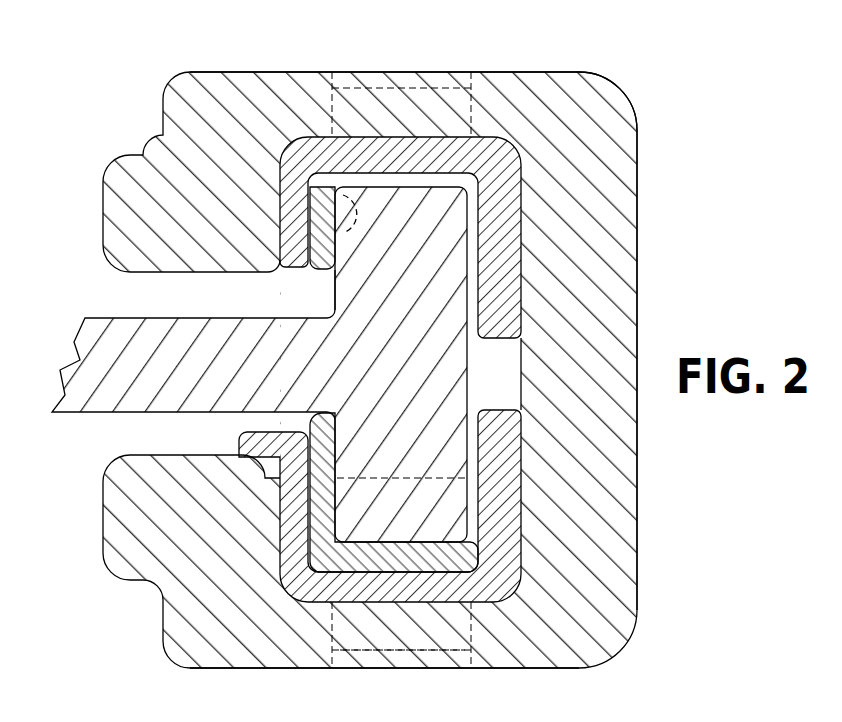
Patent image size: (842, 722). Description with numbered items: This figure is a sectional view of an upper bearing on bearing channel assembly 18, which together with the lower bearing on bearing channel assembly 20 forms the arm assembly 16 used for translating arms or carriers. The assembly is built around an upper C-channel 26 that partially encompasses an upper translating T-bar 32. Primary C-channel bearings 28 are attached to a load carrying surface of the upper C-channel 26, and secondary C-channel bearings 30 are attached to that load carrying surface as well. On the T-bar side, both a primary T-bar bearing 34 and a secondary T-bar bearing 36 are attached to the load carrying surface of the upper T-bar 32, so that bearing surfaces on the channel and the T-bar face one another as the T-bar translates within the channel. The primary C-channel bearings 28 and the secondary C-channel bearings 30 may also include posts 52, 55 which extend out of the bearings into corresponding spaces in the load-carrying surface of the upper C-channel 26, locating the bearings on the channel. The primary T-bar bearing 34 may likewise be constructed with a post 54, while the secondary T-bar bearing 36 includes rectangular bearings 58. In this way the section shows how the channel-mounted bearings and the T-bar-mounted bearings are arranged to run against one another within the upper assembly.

The arm assembly 16 is at (88, 116).
The upper bearing on bearing channel assembly 18 is at (646, 74).
The lower bearing on bearing channel assembly 20 is at (668, 721).
The upper C-channel 26 is at (640, 505).
The primary C-channel bearing 28 is at (520, 258).
The secondary C-channel bearing 30 is at (280, 537).
The upper translating T-bar 32 is at (90, 412).
The primary T-bar bearing 34 is at (327, 291).
The secondary T-bar bearing 36 is at (331, 412).
The post 52 is at (449, 70).
The post 54 is at (364, 238).
The post 55 is at (362, 650).
The rectangular bearing 58 is at (393, 478).